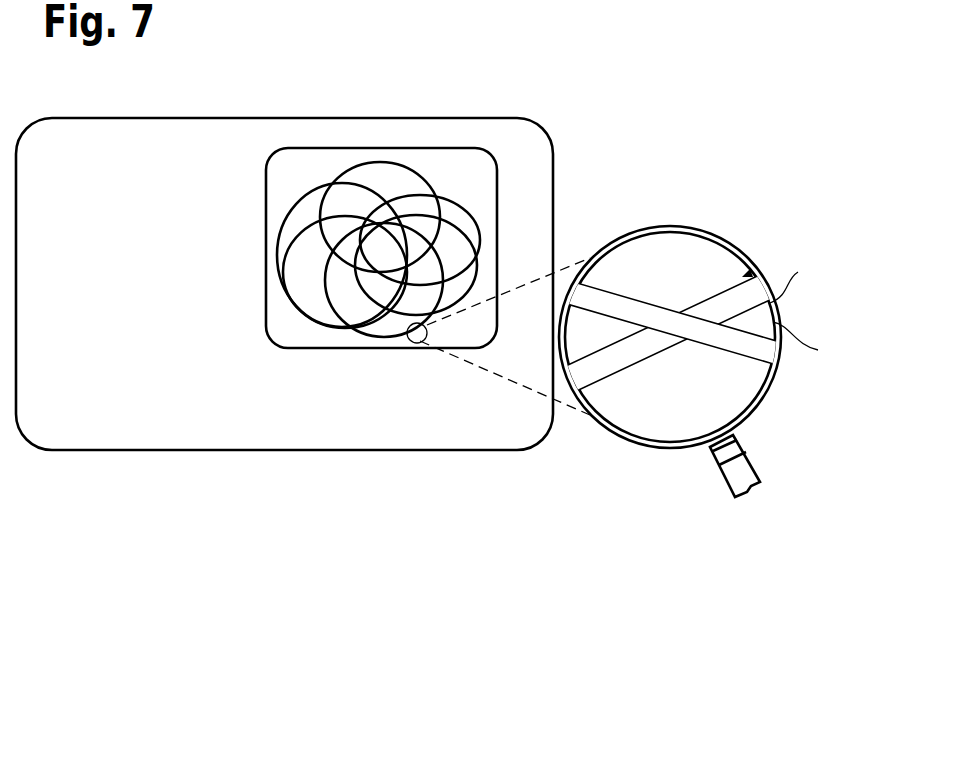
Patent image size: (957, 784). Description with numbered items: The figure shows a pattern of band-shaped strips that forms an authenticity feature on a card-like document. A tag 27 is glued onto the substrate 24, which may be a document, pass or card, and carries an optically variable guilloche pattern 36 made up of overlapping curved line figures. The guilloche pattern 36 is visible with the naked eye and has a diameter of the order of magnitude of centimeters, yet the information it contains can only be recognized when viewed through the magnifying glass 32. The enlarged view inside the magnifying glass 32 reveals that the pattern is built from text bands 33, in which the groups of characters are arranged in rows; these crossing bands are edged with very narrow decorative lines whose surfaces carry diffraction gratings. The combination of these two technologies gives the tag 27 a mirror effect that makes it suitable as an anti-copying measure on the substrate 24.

The substrate 24 is at (125, 425).
The tag 27 is at (275, 206).
The guilloche pattern 36 is at (305, 314).
The magnifying glass 32 is at (652, 253).
The text bands 33 is at (703, 333).